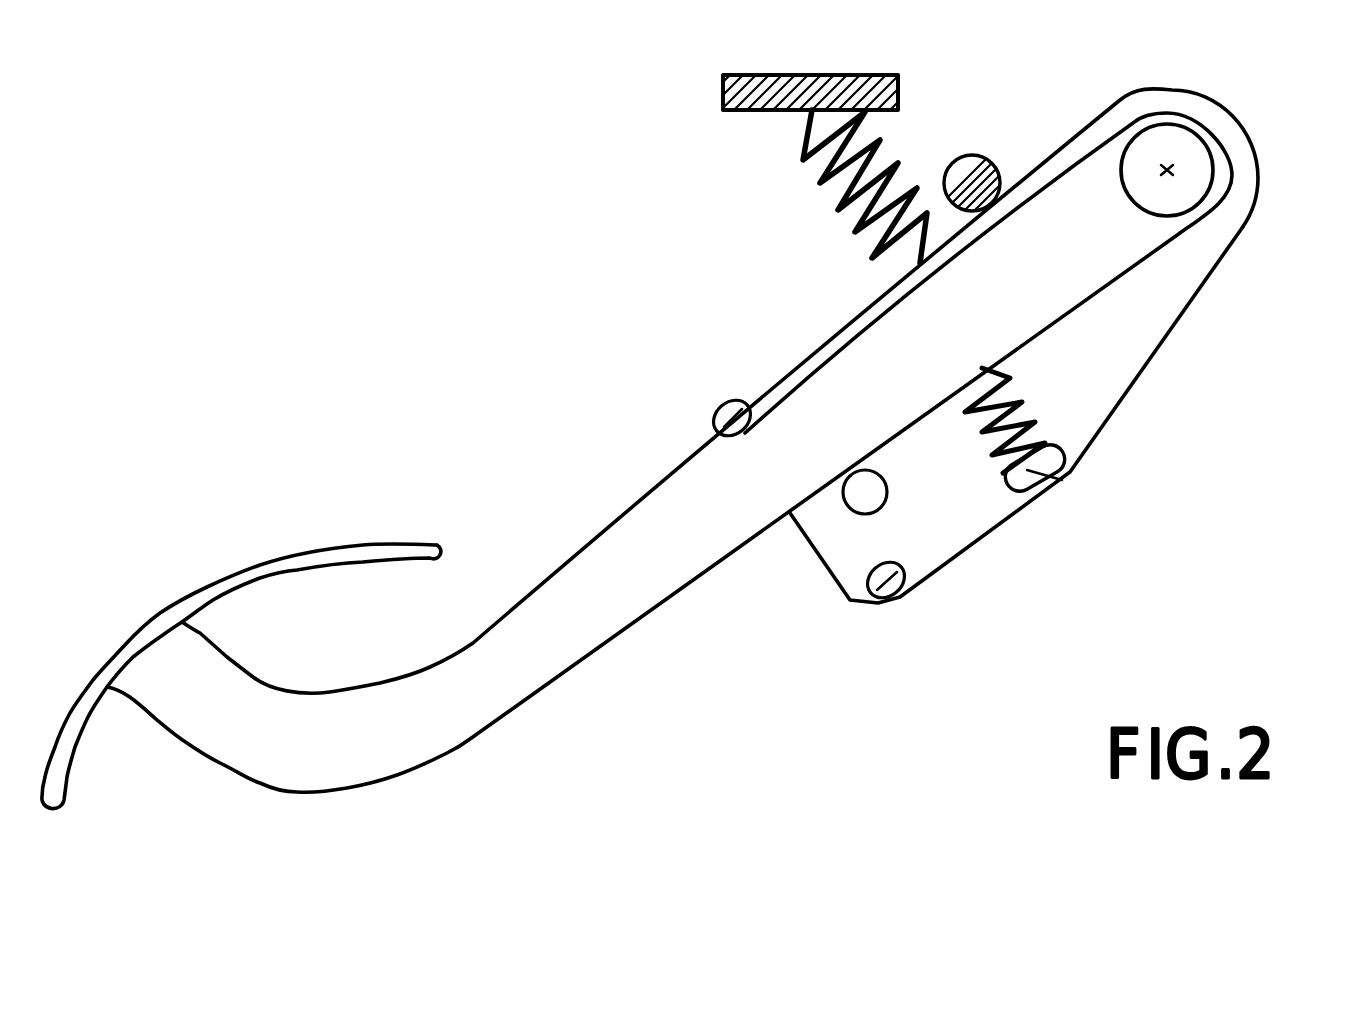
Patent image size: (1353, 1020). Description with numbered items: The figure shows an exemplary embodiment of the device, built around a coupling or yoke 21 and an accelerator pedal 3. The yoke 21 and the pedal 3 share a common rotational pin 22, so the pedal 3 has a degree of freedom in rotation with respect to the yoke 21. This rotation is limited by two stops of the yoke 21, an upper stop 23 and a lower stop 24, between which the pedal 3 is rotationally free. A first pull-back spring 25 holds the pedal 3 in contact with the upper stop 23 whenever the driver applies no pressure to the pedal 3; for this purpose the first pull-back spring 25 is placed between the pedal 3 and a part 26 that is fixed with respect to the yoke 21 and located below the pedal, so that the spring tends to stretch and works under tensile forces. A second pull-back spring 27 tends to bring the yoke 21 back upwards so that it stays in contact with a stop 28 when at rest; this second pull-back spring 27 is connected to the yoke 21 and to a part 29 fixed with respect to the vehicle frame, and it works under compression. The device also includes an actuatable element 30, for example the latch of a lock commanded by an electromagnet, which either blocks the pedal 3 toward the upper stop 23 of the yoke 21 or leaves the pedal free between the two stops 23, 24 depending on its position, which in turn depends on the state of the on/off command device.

The accelerator pedal 3 is at (443, 733).
The yoke 21 is at (1113, 365).
The rotational pin 22 is at (1172, 171).
The upper stop 23 is at (716, 413).
The lower stop 24 is at (891, 601).
The first pull-back spring 25 is at (990, 420).
The part fixed with respect to the yoke 26 is at (1052, 480).
The second pull-back spring 27 is at (840, 199).
The stop 28 is at (975, 165).
The part fixed with respect to the frame 29 is at (833, 75).
The actuatable element 30 is at (862, 492).